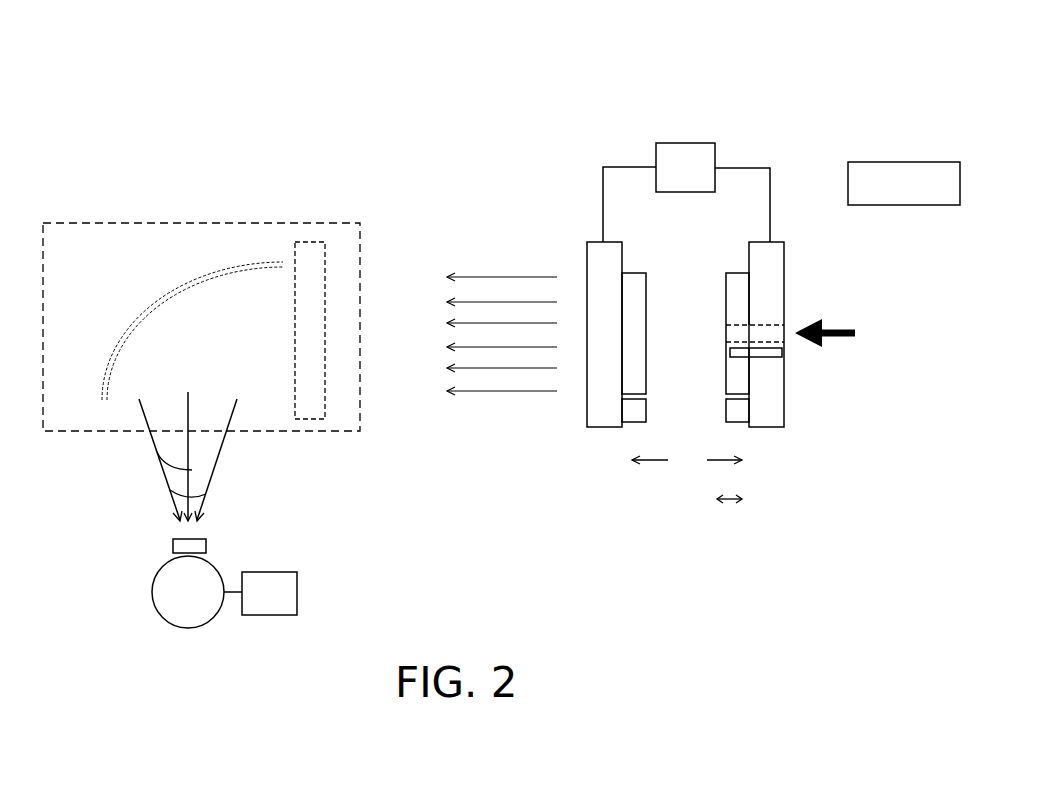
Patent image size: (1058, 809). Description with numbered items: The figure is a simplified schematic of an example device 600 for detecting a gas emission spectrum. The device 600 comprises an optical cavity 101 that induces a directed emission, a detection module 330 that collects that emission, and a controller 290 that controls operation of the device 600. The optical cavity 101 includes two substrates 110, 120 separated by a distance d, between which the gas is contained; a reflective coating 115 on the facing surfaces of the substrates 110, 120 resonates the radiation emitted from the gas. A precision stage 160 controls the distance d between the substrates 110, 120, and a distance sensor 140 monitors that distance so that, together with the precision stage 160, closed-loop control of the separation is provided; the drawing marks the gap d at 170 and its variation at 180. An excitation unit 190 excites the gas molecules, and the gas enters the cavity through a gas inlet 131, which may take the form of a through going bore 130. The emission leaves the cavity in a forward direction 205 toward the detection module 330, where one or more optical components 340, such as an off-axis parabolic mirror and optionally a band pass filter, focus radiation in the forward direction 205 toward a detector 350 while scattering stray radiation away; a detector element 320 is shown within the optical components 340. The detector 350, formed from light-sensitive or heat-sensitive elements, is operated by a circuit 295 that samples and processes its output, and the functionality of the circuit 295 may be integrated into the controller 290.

The device 600 is at (193, 80).
The optical components 340 is at (112, 222).
The detection module 330 is at (122, 336).
The detector array 320 is at (295, 377).
The forward direction 205 is at (170, 490).
The detector 350 is at (160, 578).
The circuit 295 is at (267, 572).
The optical cavity 101 is at (558, 200).
The precision stage 160 is at (713, 143).
The substrate 120 is at (622, 253).
The substrate 110 is at (749, 253).
The reflective coating 115 is at (726, 305).
The through going bore 130 is at (763, 326).
The gas inlet 131 is at (855, 333).
The excitation unit 190 is at (778, 359).
The distance sensor 140 is at (637, 422).
The gap distance d 170 is at (658, 470).
The gap change Δd 180 is at (735, 508).
The controller 290 is at (890, 162).